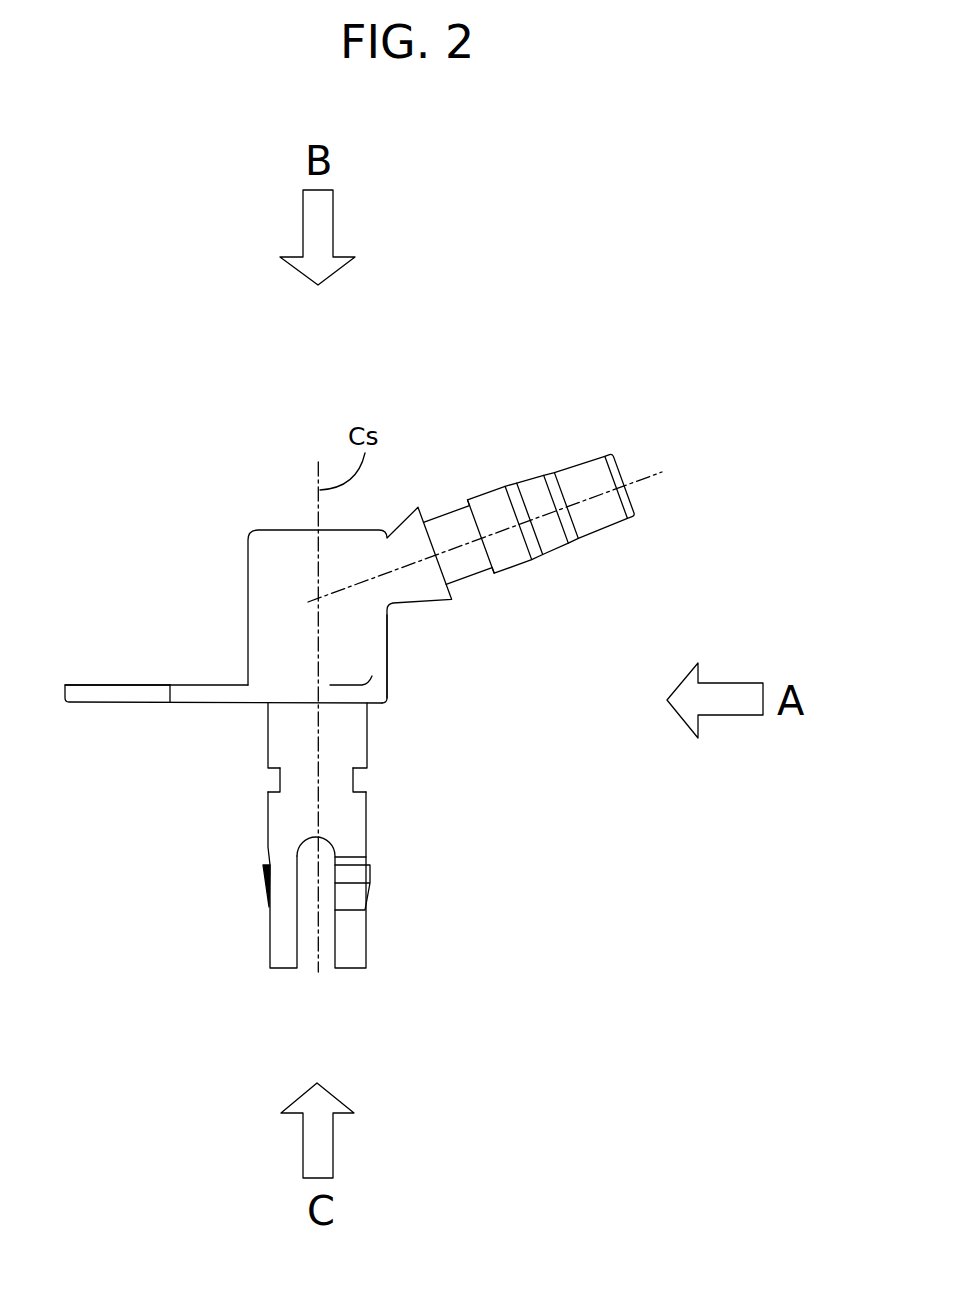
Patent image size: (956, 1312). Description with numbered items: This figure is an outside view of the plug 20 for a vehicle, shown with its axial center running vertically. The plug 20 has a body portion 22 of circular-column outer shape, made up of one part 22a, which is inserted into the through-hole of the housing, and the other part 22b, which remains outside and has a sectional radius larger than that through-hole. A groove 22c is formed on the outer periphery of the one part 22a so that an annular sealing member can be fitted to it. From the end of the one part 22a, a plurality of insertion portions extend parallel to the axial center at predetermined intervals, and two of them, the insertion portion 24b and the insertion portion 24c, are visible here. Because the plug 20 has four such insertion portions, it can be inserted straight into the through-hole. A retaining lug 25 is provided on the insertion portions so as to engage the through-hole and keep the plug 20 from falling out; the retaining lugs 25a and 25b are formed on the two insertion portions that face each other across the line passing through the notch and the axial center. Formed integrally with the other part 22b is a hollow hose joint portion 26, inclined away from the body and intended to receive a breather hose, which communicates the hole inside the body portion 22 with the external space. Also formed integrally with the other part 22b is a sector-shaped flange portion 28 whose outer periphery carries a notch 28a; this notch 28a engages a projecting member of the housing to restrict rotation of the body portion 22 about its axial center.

The plug 20 is at (466, 358).
The body portion 22 is at (457, 660).
The one part 22a is at (347, 738).
The other part 22b is at (348, 663).
The groove 22c is at (355, 778).
The insertion portion 24b is at (353, 958).
The insertion portion 24c is at (287, 958).
The retaining lug 25 is at (460, 945).
The retaining lug 25a is at (263, 868).
The retaining lug 25b is at (360, 892).
The hose joint portion 26 is at (523, 500).
The flange portion 28 is at (202, 693).
The notch 28a is at (115, 693).